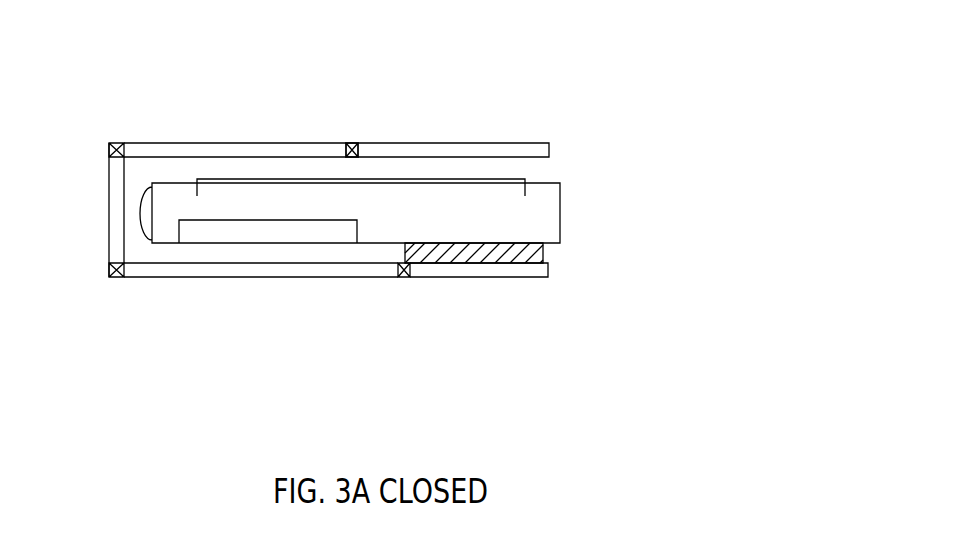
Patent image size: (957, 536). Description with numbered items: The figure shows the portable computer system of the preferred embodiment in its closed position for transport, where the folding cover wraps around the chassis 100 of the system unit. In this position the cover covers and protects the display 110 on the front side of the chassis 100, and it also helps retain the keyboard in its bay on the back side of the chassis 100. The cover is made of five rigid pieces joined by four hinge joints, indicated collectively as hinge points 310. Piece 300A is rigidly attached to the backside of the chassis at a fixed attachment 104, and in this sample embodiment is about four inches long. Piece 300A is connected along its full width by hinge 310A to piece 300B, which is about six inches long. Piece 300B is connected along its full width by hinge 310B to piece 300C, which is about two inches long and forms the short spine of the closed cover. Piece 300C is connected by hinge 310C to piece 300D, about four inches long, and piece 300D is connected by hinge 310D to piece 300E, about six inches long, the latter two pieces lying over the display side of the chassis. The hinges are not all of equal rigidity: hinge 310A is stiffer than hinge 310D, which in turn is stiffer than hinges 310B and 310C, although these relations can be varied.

The chassis 100 is at (545, 202).
The fixed attachment of folio to system unit 104 is at (547, 252).
The display 110 is at (207, 175).
The cover piece 300A is at (547, 278).
The cover piece 300B is at (200, 279).
The cover piece 300C is at (109, 203).
The cover piece 300D is at (290, 156).
The cover piece 300E is at (418, 141).
The hinge points (4 places) 310 is at (353, 146).
The hinge 310A is at (403, 280).
The hinge 310B is at (108, 279).
The hinge 310C is at (107, 141).
The hinge 310D is at (351, 141).